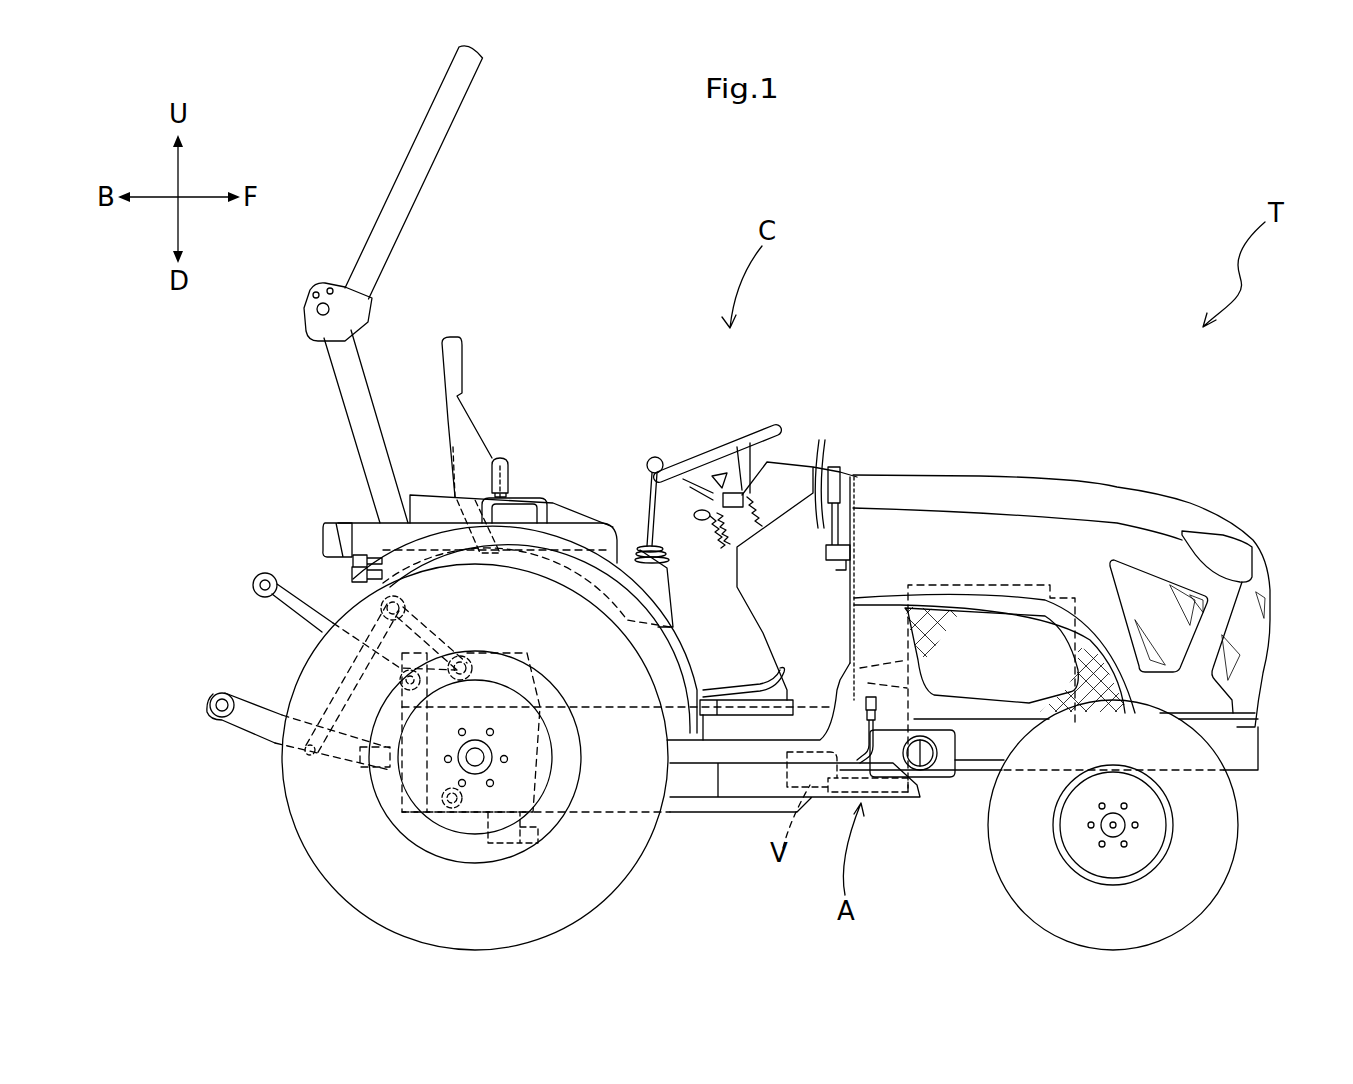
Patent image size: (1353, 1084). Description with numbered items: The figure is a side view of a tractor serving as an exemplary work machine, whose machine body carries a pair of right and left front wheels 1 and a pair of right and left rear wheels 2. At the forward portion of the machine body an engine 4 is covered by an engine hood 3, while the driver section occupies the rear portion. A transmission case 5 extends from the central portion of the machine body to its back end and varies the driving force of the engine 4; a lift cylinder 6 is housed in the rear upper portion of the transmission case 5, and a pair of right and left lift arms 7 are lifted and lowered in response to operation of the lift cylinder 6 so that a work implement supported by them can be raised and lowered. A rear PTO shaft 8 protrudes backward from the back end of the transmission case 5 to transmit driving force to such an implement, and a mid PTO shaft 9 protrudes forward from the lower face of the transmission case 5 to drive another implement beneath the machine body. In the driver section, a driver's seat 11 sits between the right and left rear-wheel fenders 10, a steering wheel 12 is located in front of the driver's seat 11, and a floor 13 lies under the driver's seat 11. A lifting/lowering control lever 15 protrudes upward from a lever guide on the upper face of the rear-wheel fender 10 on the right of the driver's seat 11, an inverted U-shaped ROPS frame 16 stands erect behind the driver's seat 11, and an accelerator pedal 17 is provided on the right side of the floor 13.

The front wheels 1 is at (1232, 845).
The rear wheels 2 is at (331, 875).
The engine hood 3 is at (997, 477).
The engine 4 is at (979, 585).
The transmission case 5 is at (701, 808).
The lift cylinder 6 is at (513, 653).
The lift arms 7 is at (431, 634).
The rear power take-off (PTO) shaft 8 is at (357, 770).
The mid PTO shaft 9 is at (526, 847).
The rear-wheel fenders 10 is at (568, 537).
The driver's seat 11 is at (470, 418).
The steering wheel 12 is at (710, 450).
The floor 13 is at (761, 687).
The lifting/lowering control lever 15 is at (508, 463).
The roll-over protection structure (ROPS) frame 16 is at (416, 183).
The accelerator pedal 17 is at (770, 677).